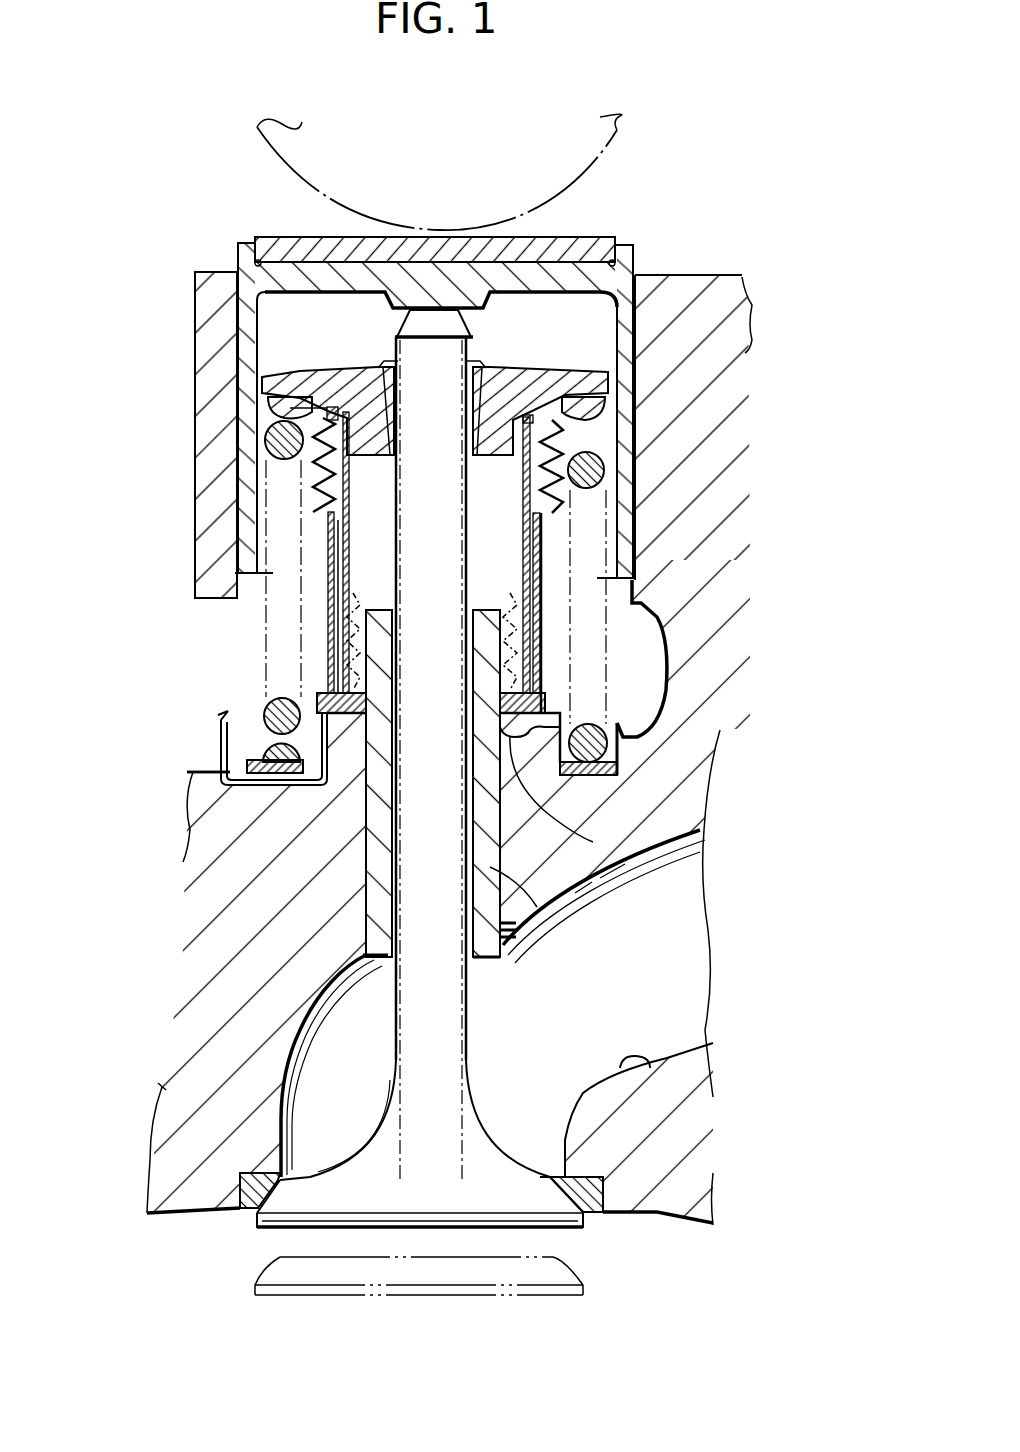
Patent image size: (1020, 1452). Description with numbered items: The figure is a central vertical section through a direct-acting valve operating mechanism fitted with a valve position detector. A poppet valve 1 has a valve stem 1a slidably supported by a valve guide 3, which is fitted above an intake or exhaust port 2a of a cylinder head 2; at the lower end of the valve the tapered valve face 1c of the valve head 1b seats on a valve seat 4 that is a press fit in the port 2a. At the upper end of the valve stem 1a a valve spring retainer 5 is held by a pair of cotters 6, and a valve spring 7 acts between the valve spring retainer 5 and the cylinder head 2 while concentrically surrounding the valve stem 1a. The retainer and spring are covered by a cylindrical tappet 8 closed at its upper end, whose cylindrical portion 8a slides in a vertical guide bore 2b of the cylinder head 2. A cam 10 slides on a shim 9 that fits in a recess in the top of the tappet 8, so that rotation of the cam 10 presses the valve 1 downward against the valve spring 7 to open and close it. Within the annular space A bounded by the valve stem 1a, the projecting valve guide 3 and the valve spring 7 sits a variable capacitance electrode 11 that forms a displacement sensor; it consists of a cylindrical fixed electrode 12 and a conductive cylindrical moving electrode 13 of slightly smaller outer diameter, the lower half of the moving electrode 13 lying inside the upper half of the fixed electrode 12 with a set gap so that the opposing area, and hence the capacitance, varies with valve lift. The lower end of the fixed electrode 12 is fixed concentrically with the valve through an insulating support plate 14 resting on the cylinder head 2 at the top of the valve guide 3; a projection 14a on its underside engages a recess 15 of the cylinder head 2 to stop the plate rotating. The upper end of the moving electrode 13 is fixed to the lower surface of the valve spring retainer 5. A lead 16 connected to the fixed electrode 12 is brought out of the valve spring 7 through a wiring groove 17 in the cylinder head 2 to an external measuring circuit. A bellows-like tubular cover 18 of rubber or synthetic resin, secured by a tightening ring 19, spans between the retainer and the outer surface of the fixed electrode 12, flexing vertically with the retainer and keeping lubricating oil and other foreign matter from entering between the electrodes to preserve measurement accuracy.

The poppet valve 1 is at (381, 812).
The valve stem 1a is at (462, 985).
The valve head 1b is at (258, 1293).
The tapered valve face 1c is at (255, 1210).
The cylinder head 2 is at (663, 1197).
The intake or exhaust port 2a is at (640, 1067).
The vertical guide bore 2b is at (240, 337).
The valve guide 3 is at (545, 908).
The valve seat 4 is at (243, 1192).
The valve spring retainer 5 is at (535, 360).
The cotters 6 is at (488, 367).
The valve spring 7 is at (607, 463).
The tappet 8 is at (658, 252).
The cylindrical portion 8a is at (640, 333).
The shim 9 is at (533, 237).
The cam 10 is at (610, 162).
The variable capacitance electrode 11 is at (460, 555).
The fixed electrode 12 is at (322, 582).
The moving electrode 13 is at (320, 478).
The insulating support plate 14 is at (553, 687).
The projection 14a is at (572, 882).
The recess 15 is at (620, 738).
The lead 16 is at (222, 720).
The wiring groove 17 is at (215, 780).
The bellows-like tubular cover 18 is at (605, 657).
The tightening ring 19 is at (322, 527).
The annular space A is at (575, 590).